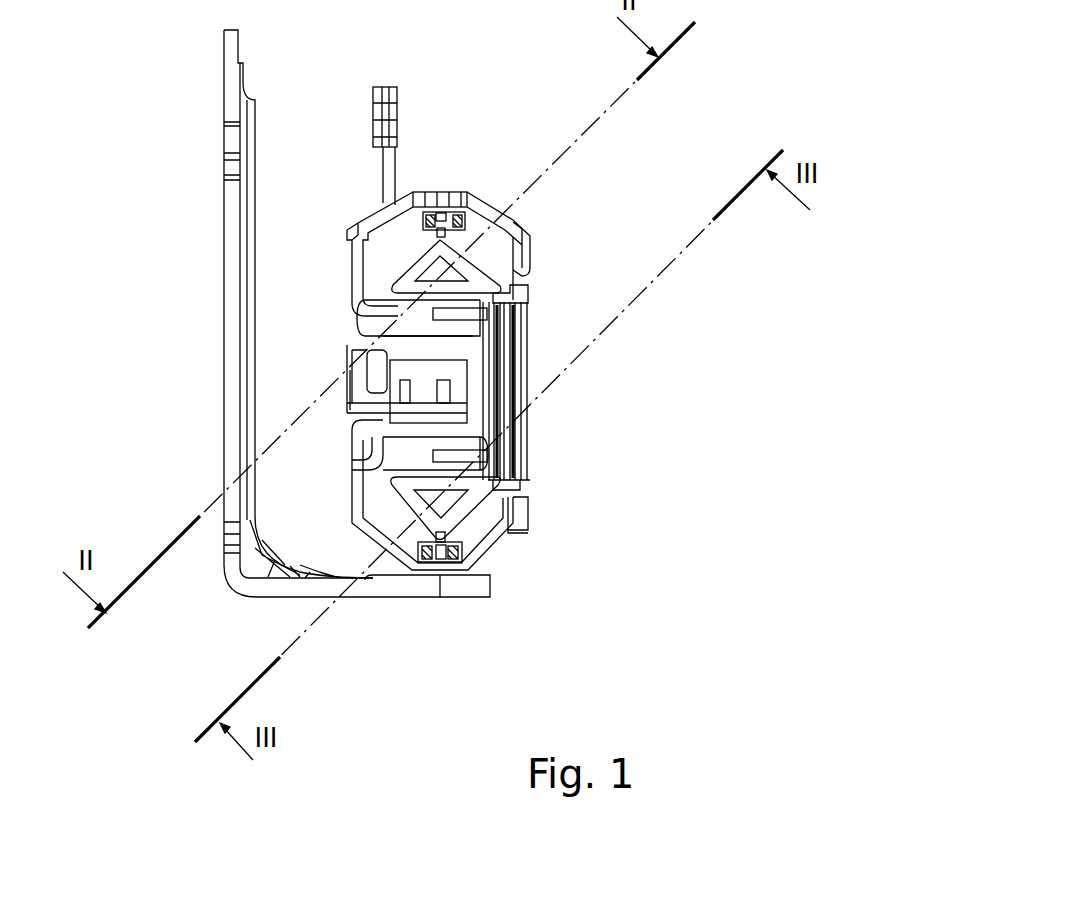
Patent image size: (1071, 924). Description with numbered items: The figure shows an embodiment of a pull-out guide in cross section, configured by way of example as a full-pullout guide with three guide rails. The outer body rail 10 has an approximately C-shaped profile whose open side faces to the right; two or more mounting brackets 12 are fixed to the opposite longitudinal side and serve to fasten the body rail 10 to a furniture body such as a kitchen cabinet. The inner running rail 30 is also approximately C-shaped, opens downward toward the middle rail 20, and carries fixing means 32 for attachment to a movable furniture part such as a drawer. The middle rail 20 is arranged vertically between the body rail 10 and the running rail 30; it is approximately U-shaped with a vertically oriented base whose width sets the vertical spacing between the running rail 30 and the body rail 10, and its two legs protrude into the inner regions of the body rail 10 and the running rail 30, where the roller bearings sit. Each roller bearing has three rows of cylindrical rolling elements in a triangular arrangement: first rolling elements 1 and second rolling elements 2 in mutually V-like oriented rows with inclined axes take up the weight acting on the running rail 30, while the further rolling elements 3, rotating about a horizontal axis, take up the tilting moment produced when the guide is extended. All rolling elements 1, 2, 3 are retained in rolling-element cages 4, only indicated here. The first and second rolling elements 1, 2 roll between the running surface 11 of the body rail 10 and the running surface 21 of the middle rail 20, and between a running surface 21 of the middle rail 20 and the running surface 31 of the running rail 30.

The first rolling elements 1 is at (475, 230).
The second rolling elements 2 is at (460, 540).
The further rolling elements 3 is at (428, 323).
The rolling-element cages 4 is at (420, 223).
The body rail 10 is at (490, 582).
The running surface of the body rail 11 is at (515, 530).
The mounting brackets 12 is at (233, 328).
The middle rail 20 is at (488, 412).
The running surface of the middle rail 21 is at (468, 258).
The running rail 30 is at (467, 195).
The running surface of the running rail 31 is at (483, 222).
The fixing means 32 is at (393, 110).